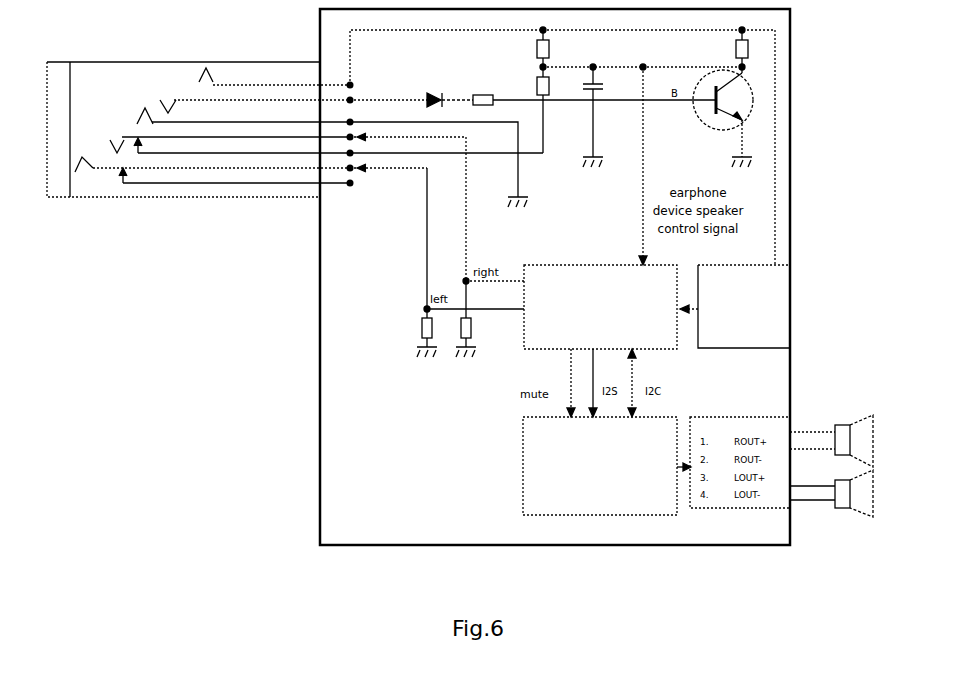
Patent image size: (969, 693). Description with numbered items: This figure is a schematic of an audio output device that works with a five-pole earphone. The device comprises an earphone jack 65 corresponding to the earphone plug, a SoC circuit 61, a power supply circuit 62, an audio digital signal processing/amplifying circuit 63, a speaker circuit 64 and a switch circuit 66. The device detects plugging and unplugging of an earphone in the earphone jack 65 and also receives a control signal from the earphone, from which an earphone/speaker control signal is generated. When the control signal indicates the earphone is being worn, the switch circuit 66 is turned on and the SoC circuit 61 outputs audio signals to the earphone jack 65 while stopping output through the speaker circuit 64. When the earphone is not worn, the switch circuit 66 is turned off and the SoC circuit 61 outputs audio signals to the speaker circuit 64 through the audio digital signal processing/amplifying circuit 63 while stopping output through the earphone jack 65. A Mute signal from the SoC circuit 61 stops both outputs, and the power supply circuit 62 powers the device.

The SoC circuit 61 is at (552, 267).
The power supply circuit 62 is at (776, 287).
The audio digital signal processing/amplifying circuit 63 is at (542, 440).
The speaker circuit 64 is at (831, 466).
The earphone jack 65 is at (108, 72).
The switch circuit 66 is at (699, 122).